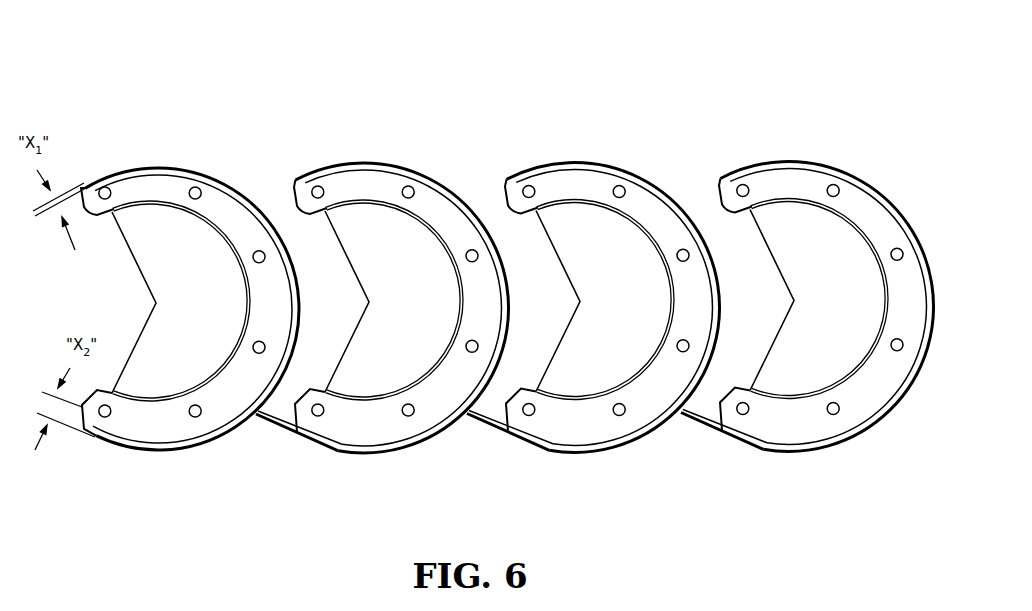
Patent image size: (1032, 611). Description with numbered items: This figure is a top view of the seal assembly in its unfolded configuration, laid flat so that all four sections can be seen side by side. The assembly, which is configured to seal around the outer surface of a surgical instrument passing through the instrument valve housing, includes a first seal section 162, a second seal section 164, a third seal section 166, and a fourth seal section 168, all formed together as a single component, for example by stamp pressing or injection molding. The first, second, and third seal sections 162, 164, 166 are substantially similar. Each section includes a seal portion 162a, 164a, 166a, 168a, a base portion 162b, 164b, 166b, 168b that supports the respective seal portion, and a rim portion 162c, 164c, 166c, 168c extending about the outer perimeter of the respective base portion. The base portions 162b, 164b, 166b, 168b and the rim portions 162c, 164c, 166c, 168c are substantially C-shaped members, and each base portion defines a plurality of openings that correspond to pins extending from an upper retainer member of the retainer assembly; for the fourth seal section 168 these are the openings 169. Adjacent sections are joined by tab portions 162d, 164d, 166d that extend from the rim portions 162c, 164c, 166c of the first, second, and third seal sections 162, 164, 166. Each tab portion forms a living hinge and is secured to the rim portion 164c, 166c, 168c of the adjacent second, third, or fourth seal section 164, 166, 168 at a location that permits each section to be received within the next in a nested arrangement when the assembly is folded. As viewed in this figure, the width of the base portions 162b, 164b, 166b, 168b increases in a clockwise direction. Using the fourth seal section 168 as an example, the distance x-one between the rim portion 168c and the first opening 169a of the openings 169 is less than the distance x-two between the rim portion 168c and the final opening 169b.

The first seal section 162 is at (807, 281).
The seal portion 162a is at (842, 242).
The base portion 162b is at (775, 182).
The rim portion 162c is at (804, 157).
The tab portion 162d is at (681, 413).
The second seal section 164 is at (593, 259).
The seal portion 164a is at (632, 248).
The base portion 164b is at (563, 188).
The rim portion 164c is at (599, 163).
The tab portion 164d is at (469, 412).
The third seal section 166 is at (382, 282).
The seal portion 166a is at (407, 243).
The base portion 166b is at (357, 180).
The rim portion 166c is at (389, 166).
The tab portion 166d is at (259, 414).
The fourth seal section 168 is at (188, 284).
The seal portion 168a is at (195, 253).
The base portion 168b is at (141, 187).
The rim portion 168c is at (163, 165).
The plurality of openings 169 is at (105, 418).
The first opening 169a is at (85, 181).
The final opening 169b is at (103, 419).